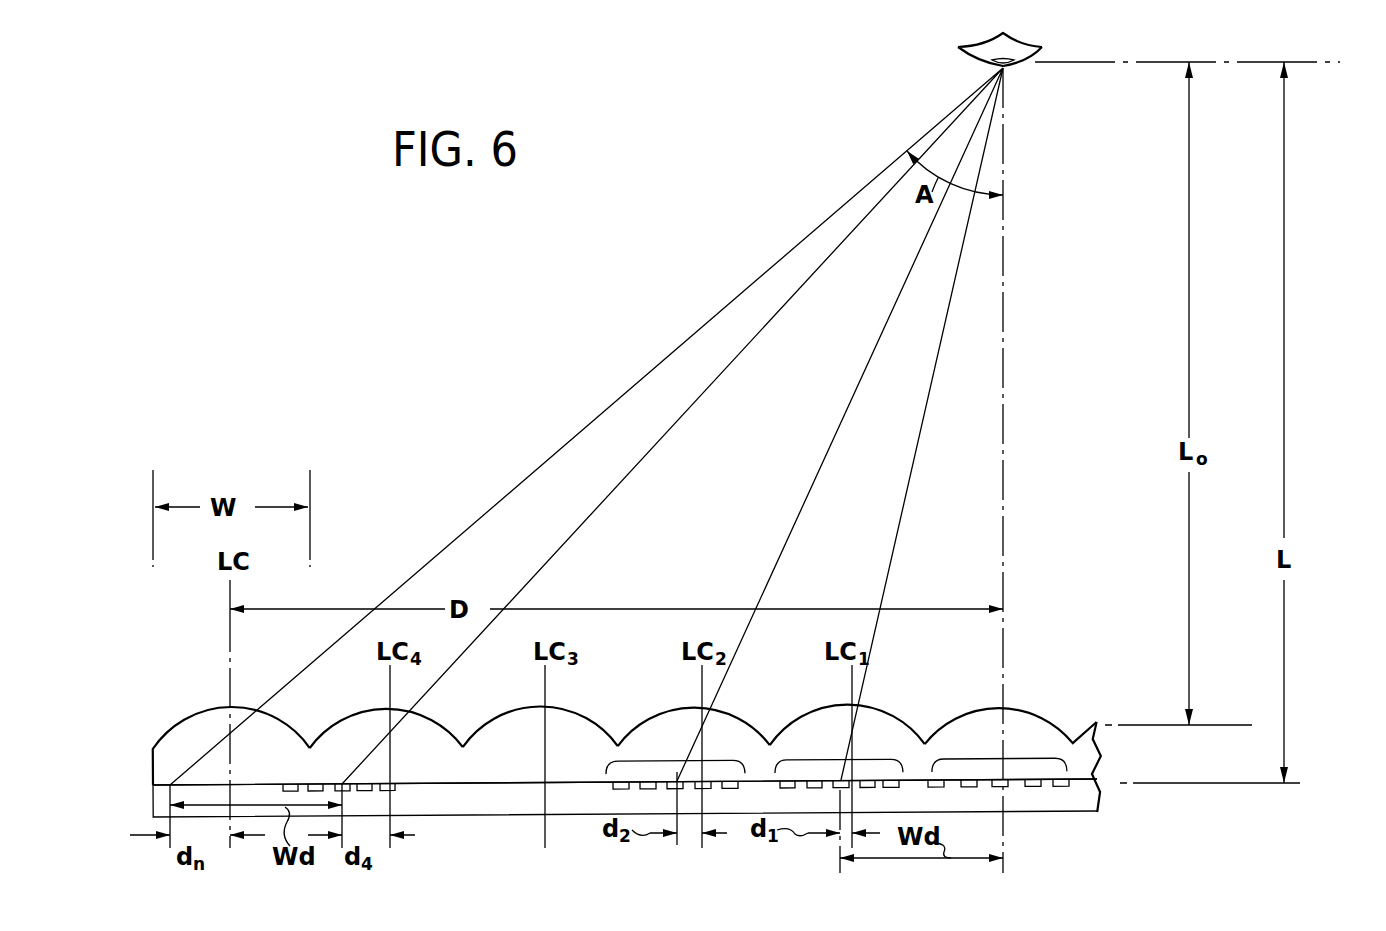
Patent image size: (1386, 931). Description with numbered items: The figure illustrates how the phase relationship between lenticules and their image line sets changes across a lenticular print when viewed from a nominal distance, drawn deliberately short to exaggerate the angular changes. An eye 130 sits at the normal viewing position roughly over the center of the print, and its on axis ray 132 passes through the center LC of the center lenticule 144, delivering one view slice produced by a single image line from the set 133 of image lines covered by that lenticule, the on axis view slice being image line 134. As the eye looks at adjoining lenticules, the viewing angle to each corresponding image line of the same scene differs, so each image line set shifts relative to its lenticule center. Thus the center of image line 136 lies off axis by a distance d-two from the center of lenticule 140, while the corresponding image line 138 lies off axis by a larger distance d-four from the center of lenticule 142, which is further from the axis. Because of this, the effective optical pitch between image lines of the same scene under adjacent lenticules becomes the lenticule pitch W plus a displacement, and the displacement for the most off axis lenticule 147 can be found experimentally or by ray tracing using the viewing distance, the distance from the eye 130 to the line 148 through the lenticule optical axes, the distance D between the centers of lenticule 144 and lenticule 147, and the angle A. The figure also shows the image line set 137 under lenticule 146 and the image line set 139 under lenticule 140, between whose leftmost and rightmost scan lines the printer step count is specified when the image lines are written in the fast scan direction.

The eye 130 is at (971, 57).
The on axis ray 132 is at (1005, 445).
The set of image lines 133 is at (1003, 765).
The image line 134 is at (1008, 786).
The image line 136 is at (665, 790).
The image line set 137 is at (850, 766).
The image line 138 is at (338, 783).
The image line set 139 is at (684, 762).
The lenticule 140 is at (742, 716).
The lenticule 142 is at (447, 716).
The lenticule 144 is at (1050, 714).
The lenticule 146 is at (896, 714).
The lenticule 147 is at (180, 725).
The line through the optical axes of the lenticules 148 is at (1212, 727).